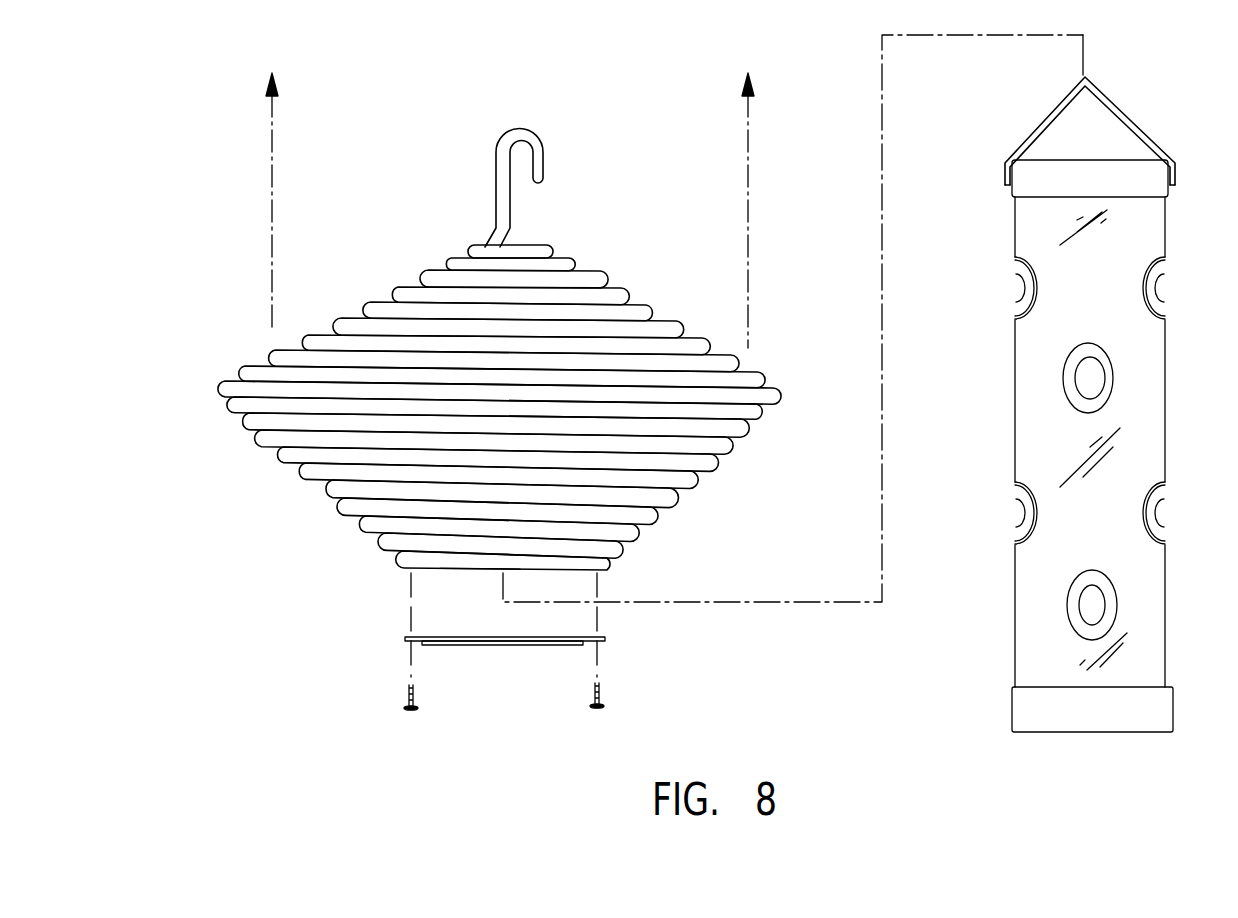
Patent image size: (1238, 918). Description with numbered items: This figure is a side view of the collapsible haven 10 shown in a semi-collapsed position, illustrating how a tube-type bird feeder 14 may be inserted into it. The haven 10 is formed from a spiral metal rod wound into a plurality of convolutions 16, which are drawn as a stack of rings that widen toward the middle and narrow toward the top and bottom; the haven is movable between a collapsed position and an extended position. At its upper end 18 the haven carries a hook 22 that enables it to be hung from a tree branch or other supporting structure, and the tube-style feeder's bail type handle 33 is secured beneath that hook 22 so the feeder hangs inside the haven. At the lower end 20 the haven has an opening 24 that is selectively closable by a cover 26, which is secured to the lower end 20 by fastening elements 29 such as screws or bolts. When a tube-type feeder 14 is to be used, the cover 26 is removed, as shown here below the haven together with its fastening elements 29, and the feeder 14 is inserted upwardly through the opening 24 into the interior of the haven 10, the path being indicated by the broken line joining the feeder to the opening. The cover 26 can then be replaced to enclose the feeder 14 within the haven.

The collapsible haven 10 is at (621, 243).
The tube-type bird feeder 14 is at (998, 168).
The convolutions 16 is at (416, 278).
The upper end 18 is at (467, 235).
The lower end 20 is at (403, 572).
The hook 22 is at (541, 141).
The opening 24 is at (477, 569).
The cover 26 is at (517, 647).
The fastening elements 29 is at (407, 695).
The bail type handle 33 is at (1125, 108).